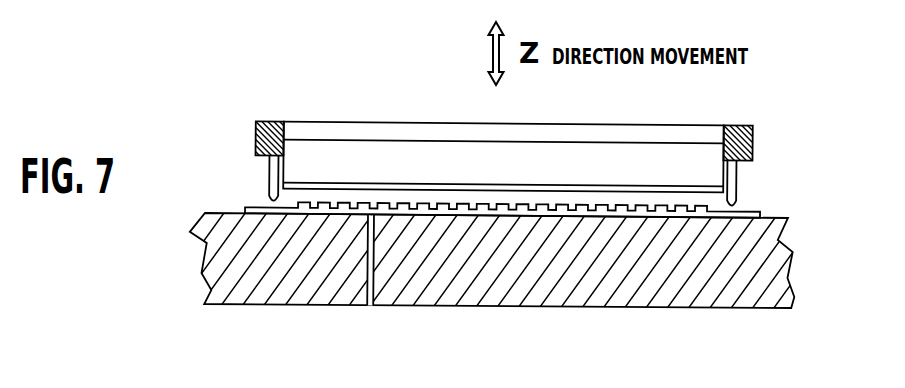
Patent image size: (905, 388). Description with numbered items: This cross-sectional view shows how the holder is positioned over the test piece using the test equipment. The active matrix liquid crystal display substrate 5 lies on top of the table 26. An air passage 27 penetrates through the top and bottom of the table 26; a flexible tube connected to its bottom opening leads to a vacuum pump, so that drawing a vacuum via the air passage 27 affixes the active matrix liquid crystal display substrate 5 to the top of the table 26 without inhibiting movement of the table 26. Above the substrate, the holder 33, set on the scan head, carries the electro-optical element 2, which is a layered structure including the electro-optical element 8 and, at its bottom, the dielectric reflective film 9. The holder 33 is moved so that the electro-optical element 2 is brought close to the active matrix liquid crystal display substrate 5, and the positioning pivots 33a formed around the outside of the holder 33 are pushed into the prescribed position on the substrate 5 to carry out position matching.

The electro-optical element 2 is at (345, 167).
The electro-optical element 8 is at (503, 133).
The dielectric reflective film 9 is at (576, 186).
The holder 33 is at (700, 125).
The positioning pivots 33a is at (268, 182).
The active matrix liquid crystal display substrate 5 is at (752, 208).
The table 26 is at (780, 217).
The air passage 27 is at (372, 306).